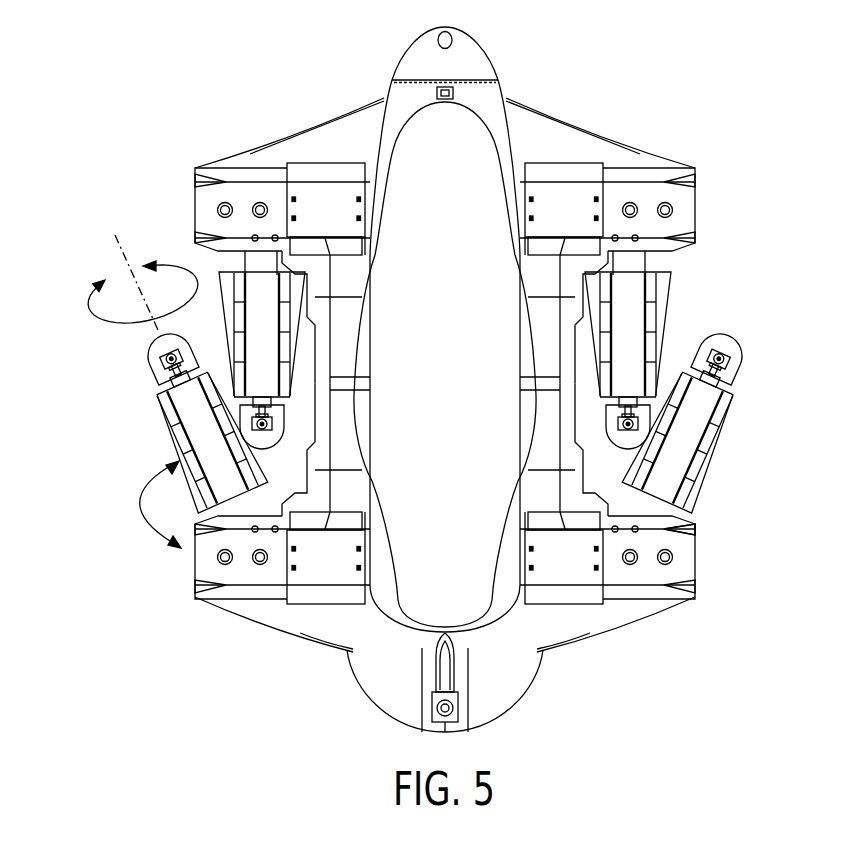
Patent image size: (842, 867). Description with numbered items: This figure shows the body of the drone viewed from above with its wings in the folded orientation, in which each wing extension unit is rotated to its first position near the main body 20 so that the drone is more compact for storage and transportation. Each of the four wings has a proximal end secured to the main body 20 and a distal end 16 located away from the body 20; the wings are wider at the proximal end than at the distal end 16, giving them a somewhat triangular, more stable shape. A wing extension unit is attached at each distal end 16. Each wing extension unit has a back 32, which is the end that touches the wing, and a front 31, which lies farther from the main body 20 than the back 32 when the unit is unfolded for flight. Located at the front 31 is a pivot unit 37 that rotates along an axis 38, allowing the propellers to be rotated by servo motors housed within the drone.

The distal end 16 is at (195, 176).
The main body 20 is at (387, 133).
The front 31 is at (727, 390).
The back 32 is at (688, 535).
The pivot unit 37 is at (158, 372).
The axis 38 is at (120, 252).